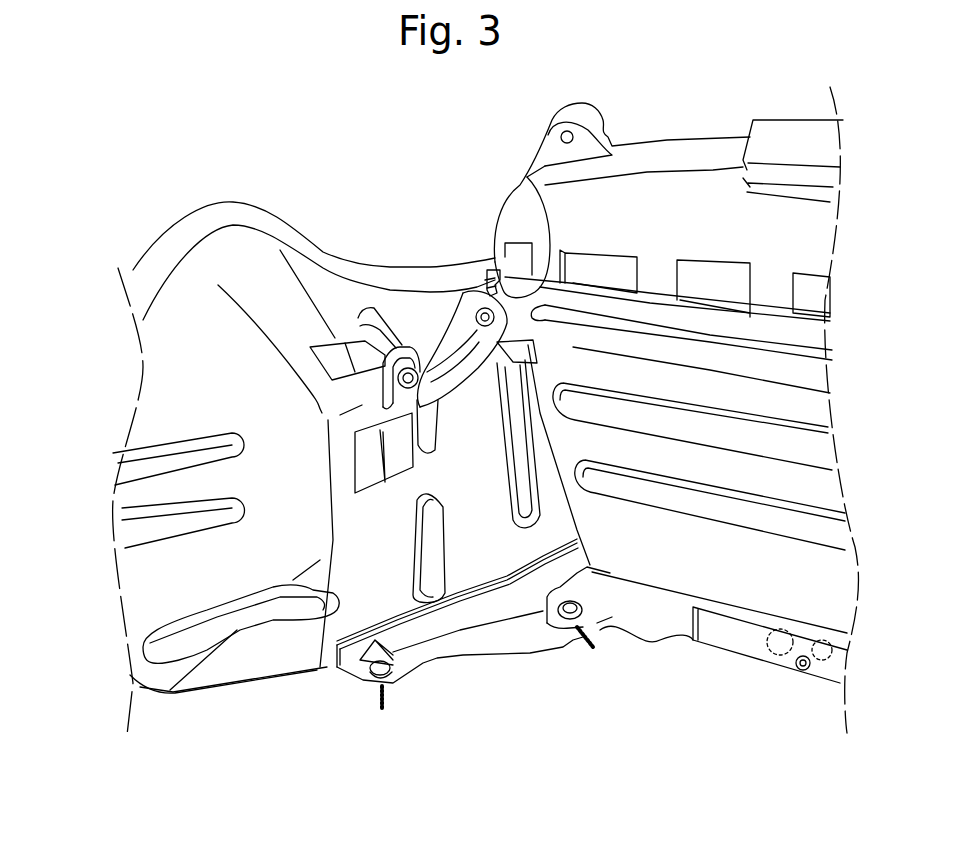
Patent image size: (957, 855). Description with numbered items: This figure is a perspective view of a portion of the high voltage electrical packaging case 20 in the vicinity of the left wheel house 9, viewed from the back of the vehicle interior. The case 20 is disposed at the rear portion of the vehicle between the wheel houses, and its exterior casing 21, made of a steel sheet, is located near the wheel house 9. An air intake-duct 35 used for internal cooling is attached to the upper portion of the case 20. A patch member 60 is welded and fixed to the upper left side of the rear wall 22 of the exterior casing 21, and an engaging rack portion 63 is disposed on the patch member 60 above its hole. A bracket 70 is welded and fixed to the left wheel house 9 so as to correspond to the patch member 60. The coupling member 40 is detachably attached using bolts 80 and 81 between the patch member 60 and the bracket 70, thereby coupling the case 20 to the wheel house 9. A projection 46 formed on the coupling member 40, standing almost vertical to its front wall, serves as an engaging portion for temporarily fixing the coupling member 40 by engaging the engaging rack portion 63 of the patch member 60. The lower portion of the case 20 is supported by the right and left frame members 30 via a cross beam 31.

The wheel house 9 is at (226, 265).
The high voltage electrical packaging case 20 is at (723, 300).
The exterior casing 21 is at (693, 347).
The rear wall 22 is at (803, 400).
The frame member 30 is at (493, 652).
The cross beam 31 is at (710, 650).
The air intake-duct 35 is at (793, 117).
The coupling member 40 is at (447, 320).
The projection 46 is at (505, 310).
The patch member 60 is at (545, 350).
The engaging rack portion 63 is at (490, 283).
The bracket 70 is at (302, 337).
The bolt 80 is at (508, 310).
The bolt 81 is at (380, 345).